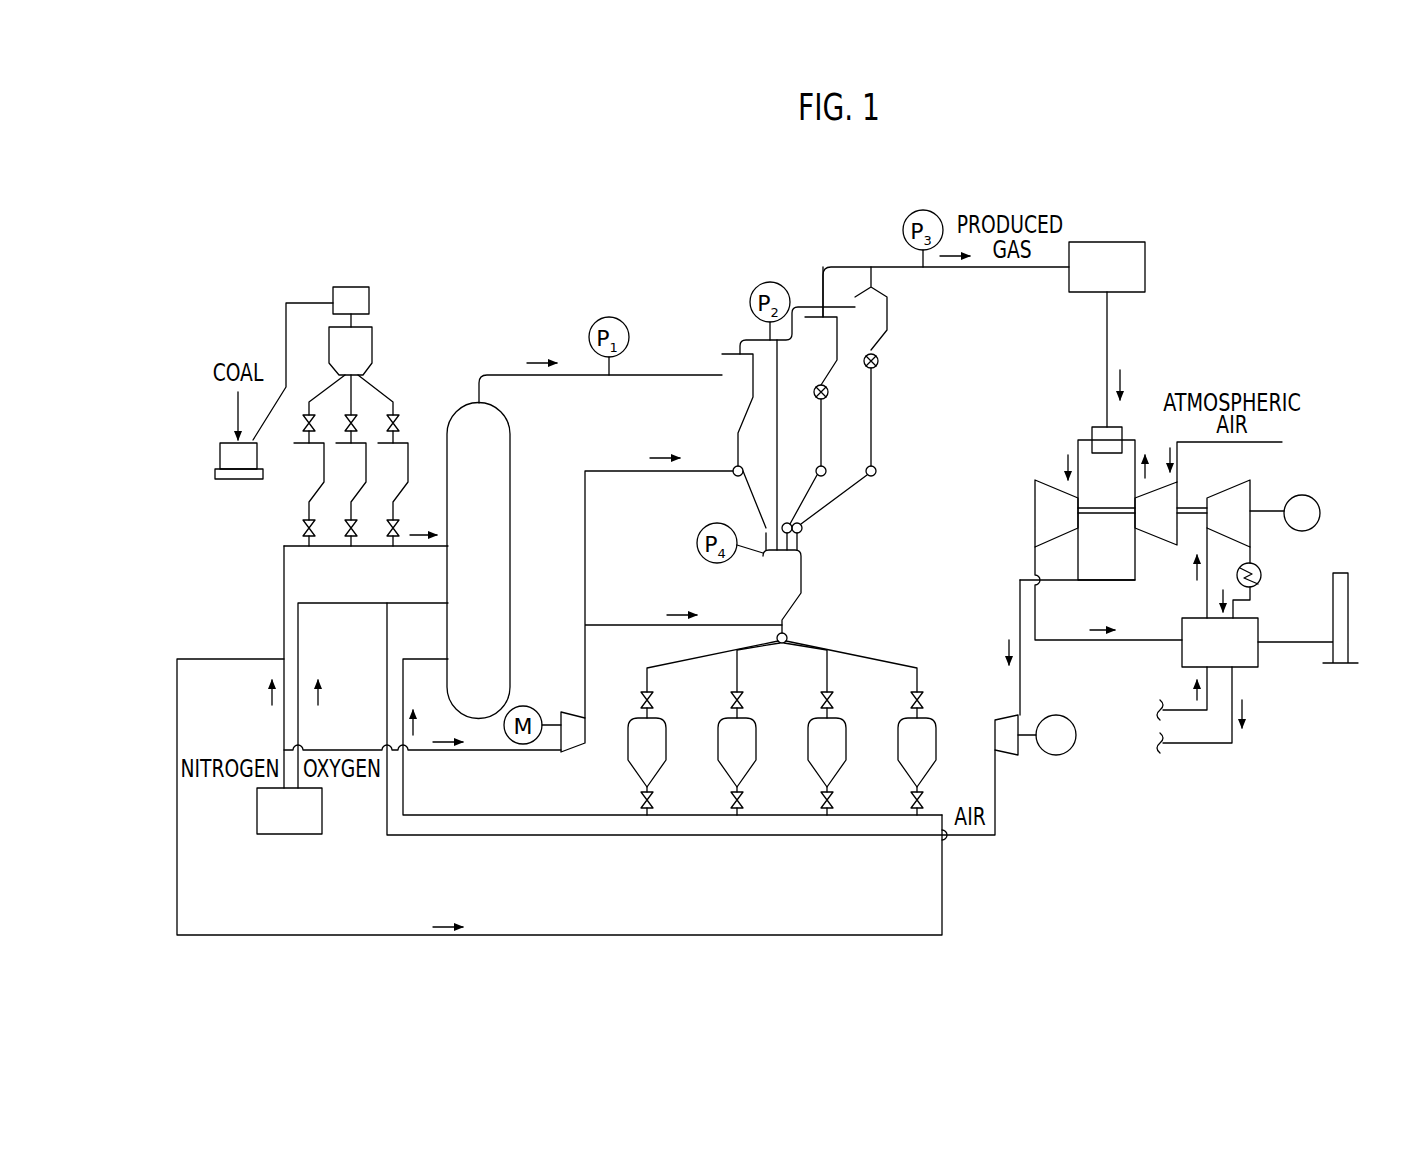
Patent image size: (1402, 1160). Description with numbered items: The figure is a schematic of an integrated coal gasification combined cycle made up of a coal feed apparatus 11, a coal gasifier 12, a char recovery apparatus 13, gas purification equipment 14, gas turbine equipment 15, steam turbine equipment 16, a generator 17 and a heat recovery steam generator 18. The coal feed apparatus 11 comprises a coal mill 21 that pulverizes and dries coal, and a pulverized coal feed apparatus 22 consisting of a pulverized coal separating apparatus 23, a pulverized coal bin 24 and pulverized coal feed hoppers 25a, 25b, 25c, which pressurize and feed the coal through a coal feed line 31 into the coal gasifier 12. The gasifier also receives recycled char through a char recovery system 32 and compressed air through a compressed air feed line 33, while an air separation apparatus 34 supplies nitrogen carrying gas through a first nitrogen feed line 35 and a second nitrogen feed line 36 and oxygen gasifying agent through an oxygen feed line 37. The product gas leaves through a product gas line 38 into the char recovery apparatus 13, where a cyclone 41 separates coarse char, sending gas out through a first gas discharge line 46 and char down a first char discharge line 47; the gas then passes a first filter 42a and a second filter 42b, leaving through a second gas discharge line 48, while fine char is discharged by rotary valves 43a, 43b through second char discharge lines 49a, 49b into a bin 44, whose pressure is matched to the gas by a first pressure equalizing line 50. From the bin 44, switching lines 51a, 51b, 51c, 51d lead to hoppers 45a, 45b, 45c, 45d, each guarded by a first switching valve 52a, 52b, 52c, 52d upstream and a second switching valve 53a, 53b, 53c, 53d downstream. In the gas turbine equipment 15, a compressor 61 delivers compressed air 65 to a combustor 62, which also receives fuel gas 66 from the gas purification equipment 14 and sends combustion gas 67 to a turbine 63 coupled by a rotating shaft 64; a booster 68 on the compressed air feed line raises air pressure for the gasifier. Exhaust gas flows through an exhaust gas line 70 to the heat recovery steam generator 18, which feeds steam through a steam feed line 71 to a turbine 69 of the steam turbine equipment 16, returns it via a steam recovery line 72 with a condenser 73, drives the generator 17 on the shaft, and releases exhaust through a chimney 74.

The coal feed apparatus 11 is at (258, 340).
The coal gasifier 12 is at (458, 384).
The char recovery apparatus 13 is at (739, 260).
The gas purification equipment 14 is at (1114, 227).
The gas turbine equipment 15 is at (1032, 453).
The steam turbine equipment 16 is at (1295, 447).
The generator 17 is at (1314, 490).
The heat recovery steam generator 18 is at (1259, 682).
The coal mill 21 is at (257, 455).
The pulverized coal feed apparatus 22 is at (338, 258).
The pulverized coal separating apparatus 23 is at (362, 287).
The pulverized coal bin 24 is at (372, 357).
The pulverized coal feed hopper 25a is at (323, 474).
The pulverized coal feed hopper 25b is at (365, 474).
The pulverized coal feed hopper 25c is at (407, 474).
The coal feed line 31 is at (415, 548).
The char recovery system 32 is at (490, 752).
The compressed air feed line 33 is at (447, 837).
The air separation apparatus 34 is at (290, 834).
The first nitrogen feed line 35 is at (284, 583).
The second nitrogen feed line 36 is at (380, 935).
The oxygen feed line 37 is at (337, 603).
The product gas line 38 is at (662, 377).
The cyclone 41 is at (732, 352).
The first filter 42a is at (815, 325).
The second filter 42b is at (888, 296).
The rotary valve 43a is at (815, 400).
The rotary valve 43b is at (864, 365).
The bin 44 is at (763, 572).
The hopper 45a is at (628, 752).
The hopper 45b is at (718, 752).
The hopper 45c is at (808, 752).
The hopper 45d is at (898, 752).
The first gas discharge line 46 is at (735, 350).
The first char discharge line 47 is at (733, 440).
The second gas discharge line 48 is at (1050, 269).
The second char discharge line 49a is at (821, 438).
The second char discharge line 49b is at (845, 488).
The first pressure equalizing line 50 is at (776, 470).
The switching line 51a is at (697, 660).
The switching line 51b is at (752, 650).
The switching line 51c is at (806, 645).
The switching line 51d is at (895, 661).
The first switching valve 52a is at (653, 700).
The first switching valve 52b is at (743, 700).
The first switching valve 52c is at (833, 700).
The first switching valve 52d is at (923, 700).
The second switching valve 53a is at (641, 803).
The second switching valve 53b is at (731, 803).
The second switching valve 53c is at (821, 803).
The second switching valve 53d is at (911, 803).
The compressor 61 is at (1160, 536).
The combustor 62 is at (1120, 422).
The turbine 63 is at (1040, 505).
The rotating shaft 64 is at (1108, 518).
The compressed air 65 is at (1141, 472).
The fuel gas 66 is at (1108, 333).
The combustion gas 67 is at (1068, 454).
The booster 68 is at (1010, 757).
The turbine 69 is at (1241, 501).
The exhaust gas line 70 is at (1075, 643).
The steam feed line 71 is at (1207, 600).
The steam recovery line 72 is at (1255, 555).
The condenser 73 is at (1260, 583).
The chimney 74 is at (1349, 590).